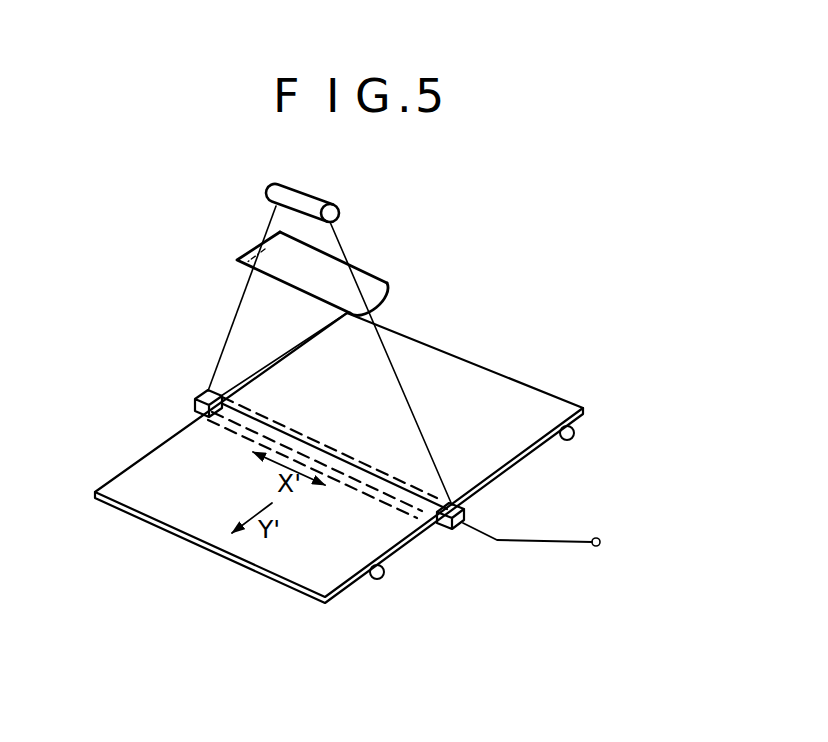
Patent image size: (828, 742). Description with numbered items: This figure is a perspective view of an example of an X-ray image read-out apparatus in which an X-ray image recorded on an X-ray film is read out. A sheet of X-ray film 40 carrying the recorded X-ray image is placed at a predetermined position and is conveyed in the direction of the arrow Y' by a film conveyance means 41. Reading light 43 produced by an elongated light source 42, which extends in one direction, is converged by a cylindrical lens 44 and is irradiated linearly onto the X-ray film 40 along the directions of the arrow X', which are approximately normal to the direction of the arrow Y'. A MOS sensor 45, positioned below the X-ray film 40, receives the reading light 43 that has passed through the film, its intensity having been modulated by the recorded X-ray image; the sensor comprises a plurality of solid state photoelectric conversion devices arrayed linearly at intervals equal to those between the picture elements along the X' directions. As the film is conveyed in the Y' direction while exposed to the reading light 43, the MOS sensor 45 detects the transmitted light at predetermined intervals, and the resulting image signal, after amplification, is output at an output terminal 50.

The X-ray film 40 is at (553, 390).
The film conveyance means 41 is at (575, 437).
The elongated light source 42 is at (328, 204).
The reading light 43 is at (331, 241).
The cylindrical lens 44 is at (378, 278).
The MOS sensor 45 is at (466, 512).
The output terminal 50 is at (597, 547).